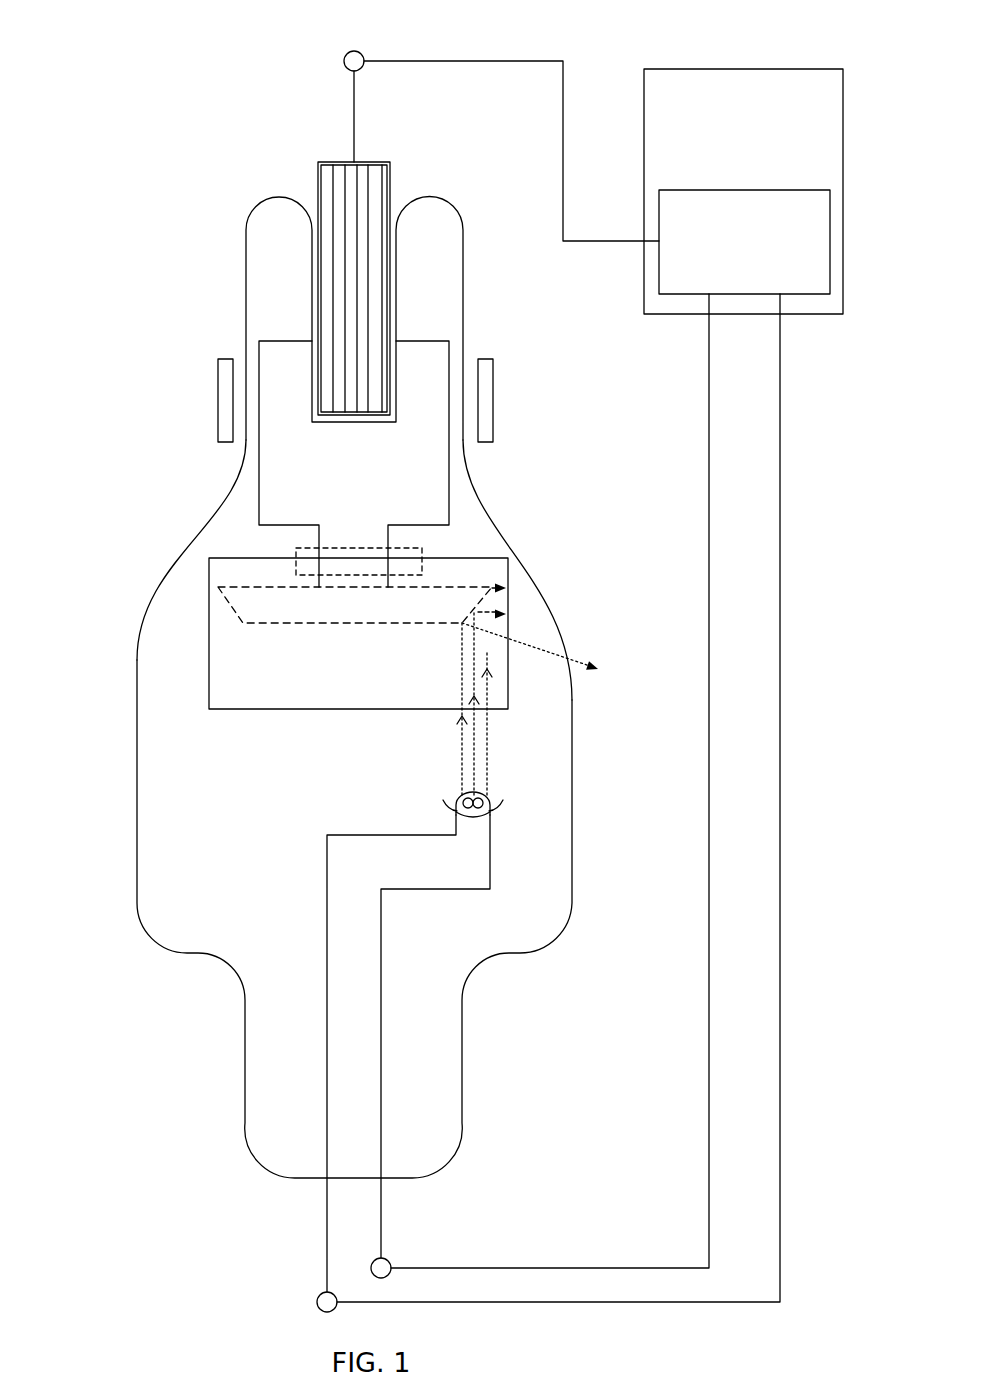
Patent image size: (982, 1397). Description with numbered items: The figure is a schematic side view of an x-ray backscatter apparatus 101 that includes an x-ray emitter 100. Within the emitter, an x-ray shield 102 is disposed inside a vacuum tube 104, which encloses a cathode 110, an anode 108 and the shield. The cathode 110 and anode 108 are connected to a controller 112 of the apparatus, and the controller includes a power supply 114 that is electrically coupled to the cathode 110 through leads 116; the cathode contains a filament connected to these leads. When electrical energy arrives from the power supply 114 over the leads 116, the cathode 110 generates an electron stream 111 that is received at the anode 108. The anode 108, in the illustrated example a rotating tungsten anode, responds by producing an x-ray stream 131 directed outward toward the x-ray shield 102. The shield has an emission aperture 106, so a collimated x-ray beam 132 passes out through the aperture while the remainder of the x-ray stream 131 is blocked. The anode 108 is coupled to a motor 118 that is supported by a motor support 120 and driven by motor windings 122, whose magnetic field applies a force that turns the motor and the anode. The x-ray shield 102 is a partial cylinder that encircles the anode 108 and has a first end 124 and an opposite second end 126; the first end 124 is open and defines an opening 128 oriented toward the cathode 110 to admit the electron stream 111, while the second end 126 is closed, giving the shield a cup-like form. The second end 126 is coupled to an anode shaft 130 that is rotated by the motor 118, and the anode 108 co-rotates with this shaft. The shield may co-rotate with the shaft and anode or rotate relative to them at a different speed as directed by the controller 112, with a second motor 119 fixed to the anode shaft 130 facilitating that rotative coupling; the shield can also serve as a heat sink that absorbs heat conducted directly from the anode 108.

The x-ray emitter 100 is at (240, 300).
The x-ray backscatter apparatus 101 is at (170, 66).
The x-ray shield 102 is at (510, 567).
The vacuum tube 104 is at (137, 770).
The emission aperture 106 is at (522, 630).
The anode 108 is at (358, 633).
The cathode 110 is at (433, 787).
The electron stream 111 is at (607, 803).
The controller 112 is at (743, 191).
The power supply 114 is at (744, 242).
The leads 116 is at (563, 100).
The motor 118 is at (354, 464).
The second motor 119 is at (296, 548).
The motor support 120 is at (318, 193).
The motor windings 122 is at (218, 402).
The first end 124 is at (235, 710).
The second end 126 is at (215, 558).
The opening 128 is at (338, 712).
The anode shaft 130 is at (358, 538).
The x-ray stream 131 is at (496, 649).
The collimated x-ray beam 132 is at (552, 657).